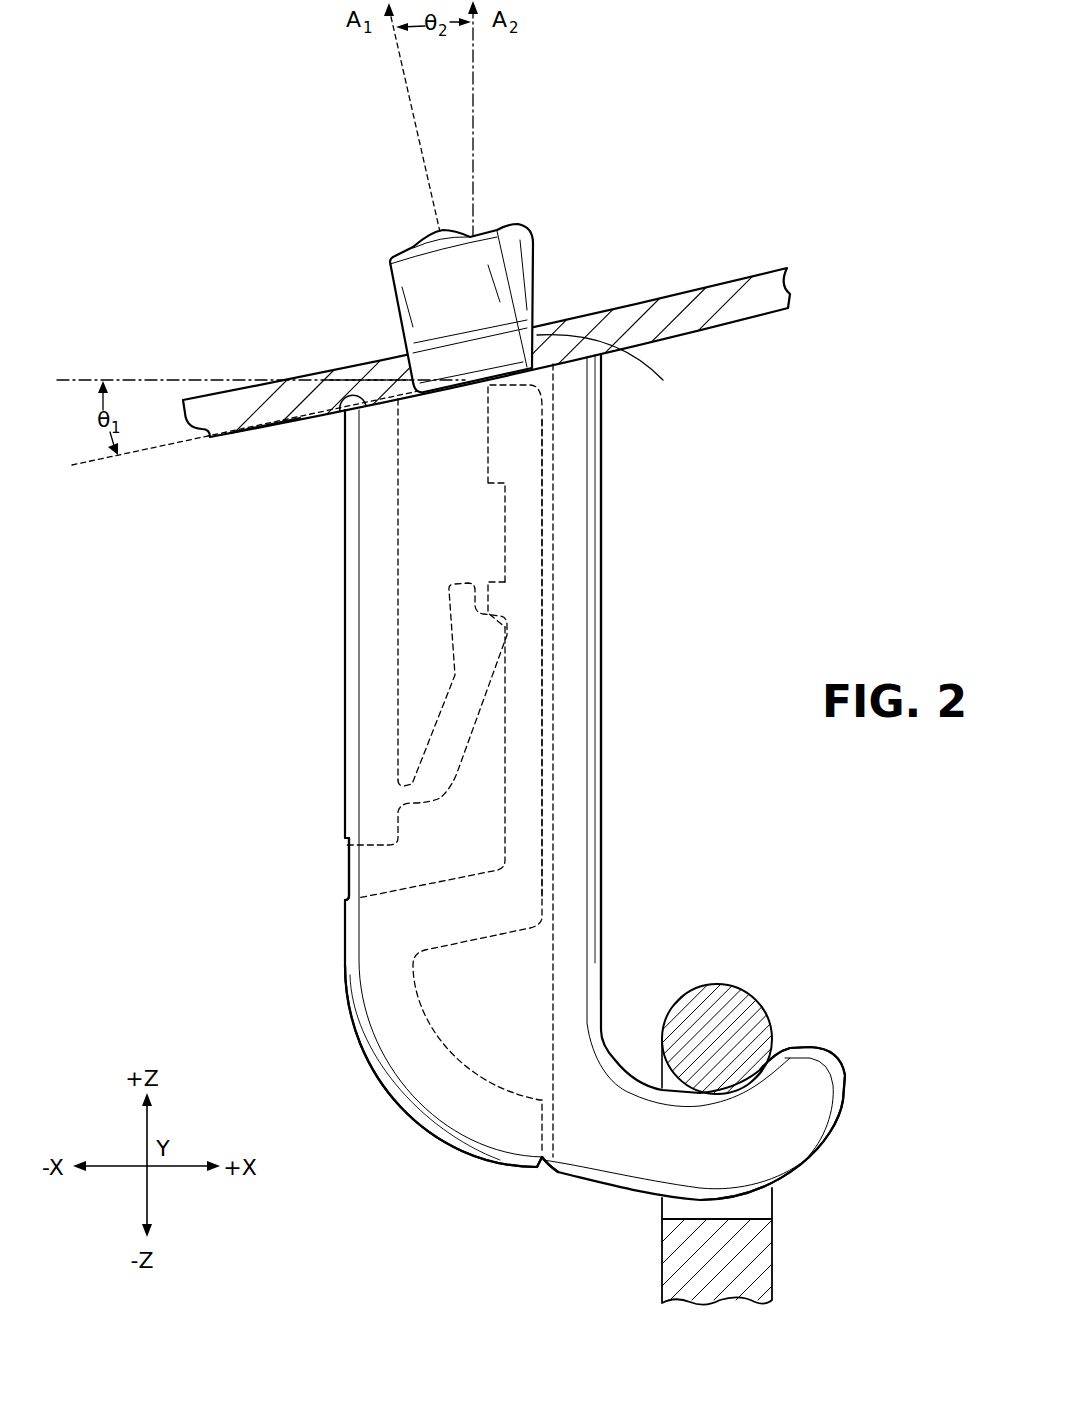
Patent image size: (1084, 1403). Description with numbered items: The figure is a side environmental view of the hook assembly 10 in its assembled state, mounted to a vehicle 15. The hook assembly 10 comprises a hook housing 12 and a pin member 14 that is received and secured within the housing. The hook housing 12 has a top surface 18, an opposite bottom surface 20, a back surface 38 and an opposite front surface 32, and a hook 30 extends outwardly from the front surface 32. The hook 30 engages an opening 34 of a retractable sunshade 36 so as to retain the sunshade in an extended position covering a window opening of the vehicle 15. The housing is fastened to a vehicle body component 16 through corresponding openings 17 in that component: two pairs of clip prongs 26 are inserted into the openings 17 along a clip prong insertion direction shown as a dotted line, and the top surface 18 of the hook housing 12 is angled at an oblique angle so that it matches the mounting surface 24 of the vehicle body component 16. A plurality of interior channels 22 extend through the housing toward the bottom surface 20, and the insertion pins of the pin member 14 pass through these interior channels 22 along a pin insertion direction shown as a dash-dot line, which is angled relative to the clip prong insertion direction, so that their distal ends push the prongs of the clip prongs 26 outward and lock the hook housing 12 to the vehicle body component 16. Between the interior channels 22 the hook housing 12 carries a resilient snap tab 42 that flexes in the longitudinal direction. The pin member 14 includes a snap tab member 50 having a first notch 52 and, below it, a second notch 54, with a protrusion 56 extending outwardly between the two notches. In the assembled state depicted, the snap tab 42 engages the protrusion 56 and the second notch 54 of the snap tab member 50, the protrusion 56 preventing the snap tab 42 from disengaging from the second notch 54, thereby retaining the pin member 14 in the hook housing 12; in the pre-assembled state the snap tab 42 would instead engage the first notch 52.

The hook assembly 10 is at (234, 114).
The hook housing 12 is at (775, 529).
The pin member 14 is at (410, 1155).
The vehicle 15 is at (800, 178).
The vehicle body component 16 is at (800, 316).
The openings 17 is at (606, 376).
The top surface 18 is at (331, 414).
The bottom surface 20 is at (555, 1172).
The interior channels 22 is at (420, 552).
The mounting surface 24 is at (255, 434).
The clip prongs 26 is at (380, 275).
The hook 30 is at (817, 1082).
The front surface 32 is at (602, 672).
The opening 34 is at (753, 1205).
The retractable sunshade 36 is at (768, 976).
The back surface 38 is at (345, 872).
The snap tab 42 is at (463, 627).
The snap tab member 50 is at (552, 543).
The first notch 52 is at (507, 515).
The second notch 54 is at (505, 785).
The protrusion 56 is at (507, 607).